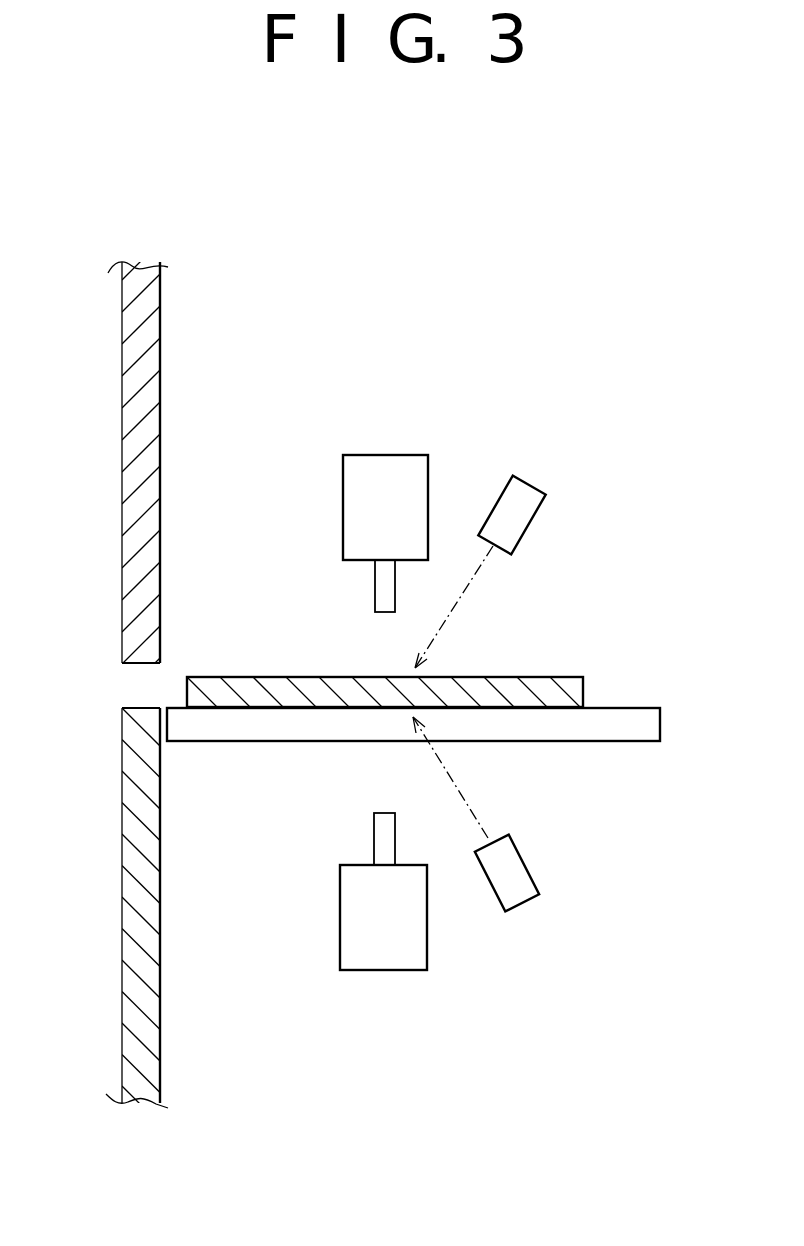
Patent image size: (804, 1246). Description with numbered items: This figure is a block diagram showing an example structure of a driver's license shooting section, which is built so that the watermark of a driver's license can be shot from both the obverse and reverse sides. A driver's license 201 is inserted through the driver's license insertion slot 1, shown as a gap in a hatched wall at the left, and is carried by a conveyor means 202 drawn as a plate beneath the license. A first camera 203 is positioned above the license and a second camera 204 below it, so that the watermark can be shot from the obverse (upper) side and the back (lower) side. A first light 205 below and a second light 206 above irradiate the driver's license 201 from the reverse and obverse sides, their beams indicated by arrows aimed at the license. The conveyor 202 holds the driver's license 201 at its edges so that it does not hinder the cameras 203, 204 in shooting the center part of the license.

The driver's license insertion slot 1 is at (138, 683).
The driver's license 201 is at (498, 677).
The conveyor means 202 is at (621, 708).
The first camera 203 is at (384, 455).
The second camera 204 is at (378, 972).
The first light 205 is at (525, 905).
The second light 206 is at (532, 480).